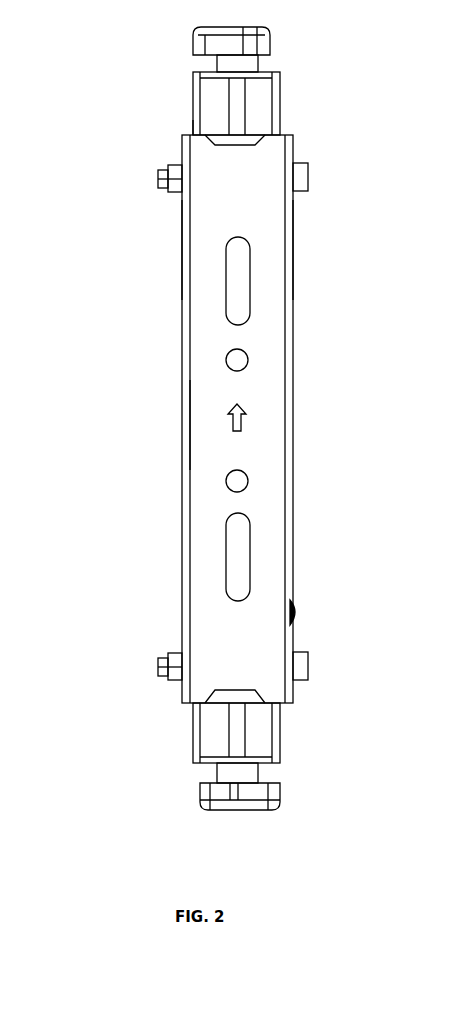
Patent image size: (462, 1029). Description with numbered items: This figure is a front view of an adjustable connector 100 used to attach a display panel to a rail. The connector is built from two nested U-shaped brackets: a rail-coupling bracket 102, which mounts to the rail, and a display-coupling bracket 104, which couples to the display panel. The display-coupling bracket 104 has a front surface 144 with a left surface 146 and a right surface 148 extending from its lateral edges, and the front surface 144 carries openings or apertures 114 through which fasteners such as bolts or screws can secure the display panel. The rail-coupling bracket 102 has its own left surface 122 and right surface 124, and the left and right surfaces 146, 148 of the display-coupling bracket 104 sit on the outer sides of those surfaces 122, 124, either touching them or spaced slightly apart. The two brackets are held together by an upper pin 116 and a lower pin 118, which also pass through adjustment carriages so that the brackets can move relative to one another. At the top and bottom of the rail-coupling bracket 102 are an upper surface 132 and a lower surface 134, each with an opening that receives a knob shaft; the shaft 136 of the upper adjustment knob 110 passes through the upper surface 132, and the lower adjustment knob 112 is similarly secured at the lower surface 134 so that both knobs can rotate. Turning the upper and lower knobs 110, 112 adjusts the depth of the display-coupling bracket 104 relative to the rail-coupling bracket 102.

The adjustable connector 100 is at (104, 134).
The rail-coupling bracket 102 is at (282, 112).
The display-coupling bracket 104 is at (198, 290).
The upper adjustment knob 110 is at (268, 38).
The lower adjustment knob 112 is at (255, 810).
The openings or apertures 114 is at (250, 300).
The upper pin 116 is at (310, 178).
The lower pin 118 is at (300, 668).
The left surface 122 is at (283, 132).
The right surface 124 is at (198, 130).
The upper surface 132 is at (215, 70).
The lower surface 134 is at (238, 740).
The shaft 136 is at (237, 120).
The front surface 144 is at (198, 432).
The left surface 146 is at (292, 262).
The right surface 148 is at (182, 250).